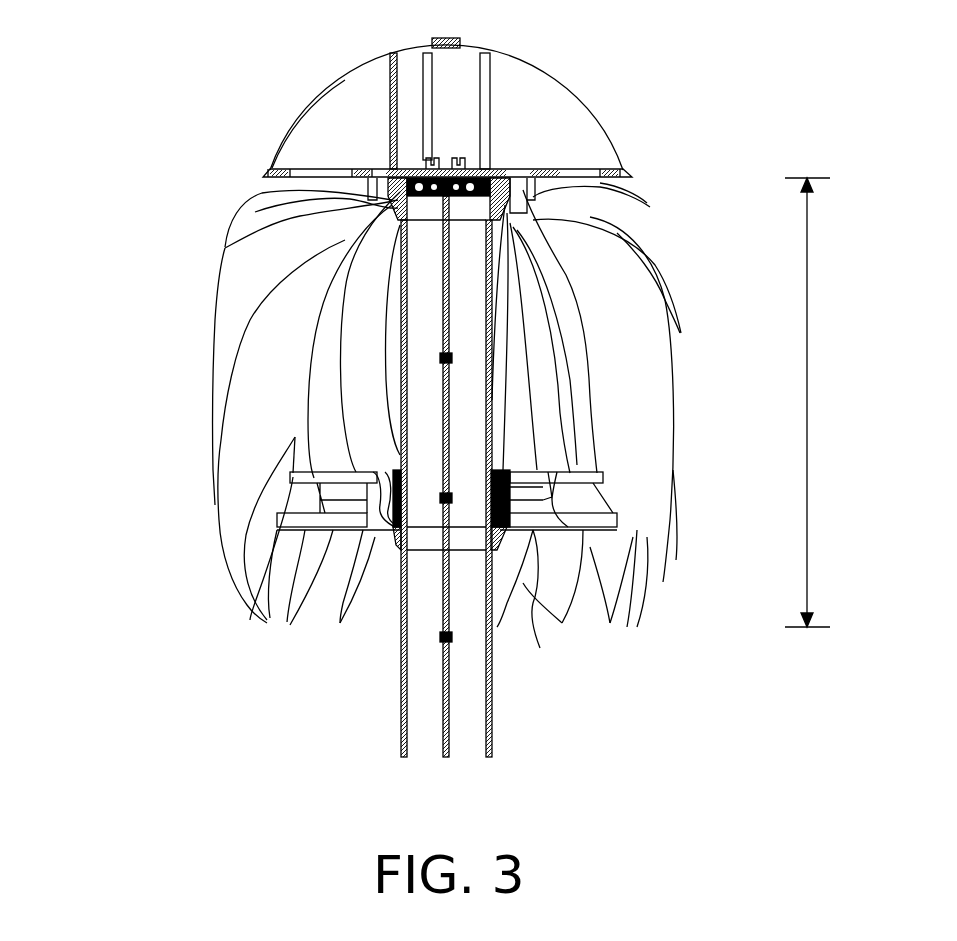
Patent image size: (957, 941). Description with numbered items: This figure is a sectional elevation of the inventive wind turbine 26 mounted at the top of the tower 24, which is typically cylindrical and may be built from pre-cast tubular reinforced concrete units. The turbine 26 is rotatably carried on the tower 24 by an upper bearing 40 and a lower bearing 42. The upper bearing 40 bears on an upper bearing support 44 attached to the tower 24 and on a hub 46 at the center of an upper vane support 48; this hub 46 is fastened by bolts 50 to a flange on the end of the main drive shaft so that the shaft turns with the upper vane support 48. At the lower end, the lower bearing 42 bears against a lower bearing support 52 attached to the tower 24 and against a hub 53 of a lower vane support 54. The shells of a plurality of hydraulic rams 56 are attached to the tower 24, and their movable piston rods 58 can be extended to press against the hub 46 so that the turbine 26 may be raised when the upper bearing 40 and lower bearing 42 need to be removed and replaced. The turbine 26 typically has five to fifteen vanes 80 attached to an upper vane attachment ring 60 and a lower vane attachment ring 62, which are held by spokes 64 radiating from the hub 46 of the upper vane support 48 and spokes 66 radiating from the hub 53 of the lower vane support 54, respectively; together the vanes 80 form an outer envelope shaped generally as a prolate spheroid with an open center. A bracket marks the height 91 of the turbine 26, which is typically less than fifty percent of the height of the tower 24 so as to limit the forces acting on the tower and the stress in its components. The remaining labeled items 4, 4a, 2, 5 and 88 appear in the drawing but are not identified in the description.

The wind turbine 26 is at (128, 134).
The dome cap 4 is at (586, 108).
The cap rim 4a is at (505, 162).
The upper bearing 40 is at (503, 162).
The hub of upper vane support 46 is at (392, 110).
The upper vane support 48 is at (322, 168).
The bolts 50 is at (458, 155).
The upper bearing support 44 is at (490, 213).
The tower 24 is at (493, 734).
The lower bearing support 52 is at (400, 607).
The lower hub 5 is at (623, 525).
The vane attachment ring 62 is at (278, 522).
The hub of lower vane support 53 is at (503, 470).
The height of the wind turbine 91 is at (807, 402).
The vane attachment ring 60 is at (273, 183).
The piston rods 58 is at (255, 212).
The hydraulic rams 56 is at (225, 248).
The spokes 64 is at (396, 198).
The spokes 66 is at (300, 475).
The lower vane support 54 is at (353, 536).
The vanes 80 is at (657, 237).
The blade array 2 is at (678, 283).
The lower bearing 42 is at (523, 595).
The blade tip 88 is at (603, 610).